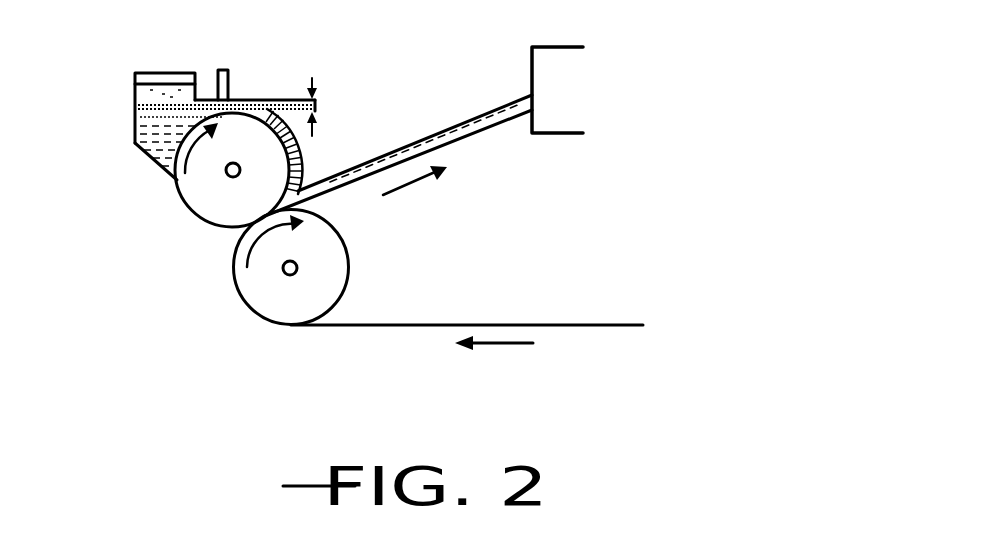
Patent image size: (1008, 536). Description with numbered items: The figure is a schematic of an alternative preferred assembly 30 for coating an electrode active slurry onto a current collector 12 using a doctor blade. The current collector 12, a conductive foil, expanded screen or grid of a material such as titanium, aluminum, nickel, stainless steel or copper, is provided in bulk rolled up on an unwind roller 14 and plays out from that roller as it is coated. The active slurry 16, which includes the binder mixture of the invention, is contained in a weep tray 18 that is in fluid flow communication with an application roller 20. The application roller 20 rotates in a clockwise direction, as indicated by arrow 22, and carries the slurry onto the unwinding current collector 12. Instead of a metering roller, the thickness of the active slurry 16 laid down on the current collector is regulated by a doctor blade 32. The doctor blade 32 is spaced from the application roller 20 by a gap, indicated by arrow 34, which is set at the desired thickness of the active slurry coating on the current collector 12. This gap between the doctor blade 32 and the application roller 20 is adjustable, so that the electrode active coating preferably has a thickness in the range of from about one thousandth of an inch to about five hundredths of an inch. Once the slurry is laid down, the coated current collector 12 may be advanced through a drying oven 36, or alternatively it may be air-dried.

The current collector 12 is at (438, 323).
The unwind roller 14 is at (327, 258).
The active slurry 16 is at (167, 100).
The weep tray 18 is at (133, 103).
The application roller 20 is at (205, 200).
The arrow 22 is at (192, 155).
The assembly 30 is at (425, 86).
The doctor blade 32 is at (235, 100).
The arrow 34 is at (318, 108).
The drying oven 36 is at (553, 130).